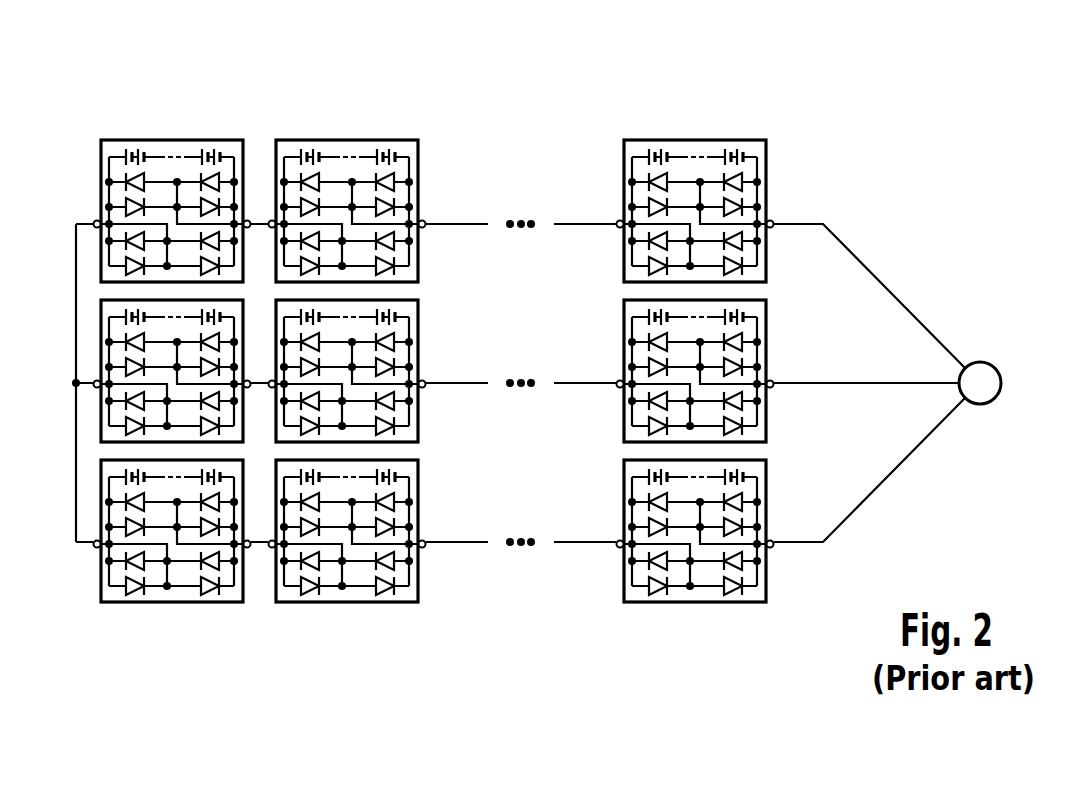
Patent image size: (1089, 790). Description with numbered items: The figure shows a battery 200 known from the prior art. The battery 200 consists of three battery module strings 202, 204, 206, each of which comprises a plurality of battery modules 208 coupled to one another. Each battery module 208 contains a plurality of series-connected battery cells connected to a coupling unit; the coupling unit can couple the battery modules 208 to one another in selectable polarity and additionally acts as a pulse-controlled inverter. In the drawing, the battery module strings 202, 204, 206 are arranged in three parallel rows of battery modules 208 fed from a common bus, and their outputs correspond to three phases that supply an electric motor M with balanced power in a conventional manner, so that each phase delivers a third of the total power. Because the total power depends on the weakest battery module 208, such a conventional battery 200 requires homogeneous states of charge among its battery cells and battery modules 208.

The battery 200 is at (508, 90).
The battery module string 202 is at (793, 222).
The battery module string 204 is at (793, 381).
The battery module string 206 is at (793, 540).
The battery module 208 is at (173, 140).